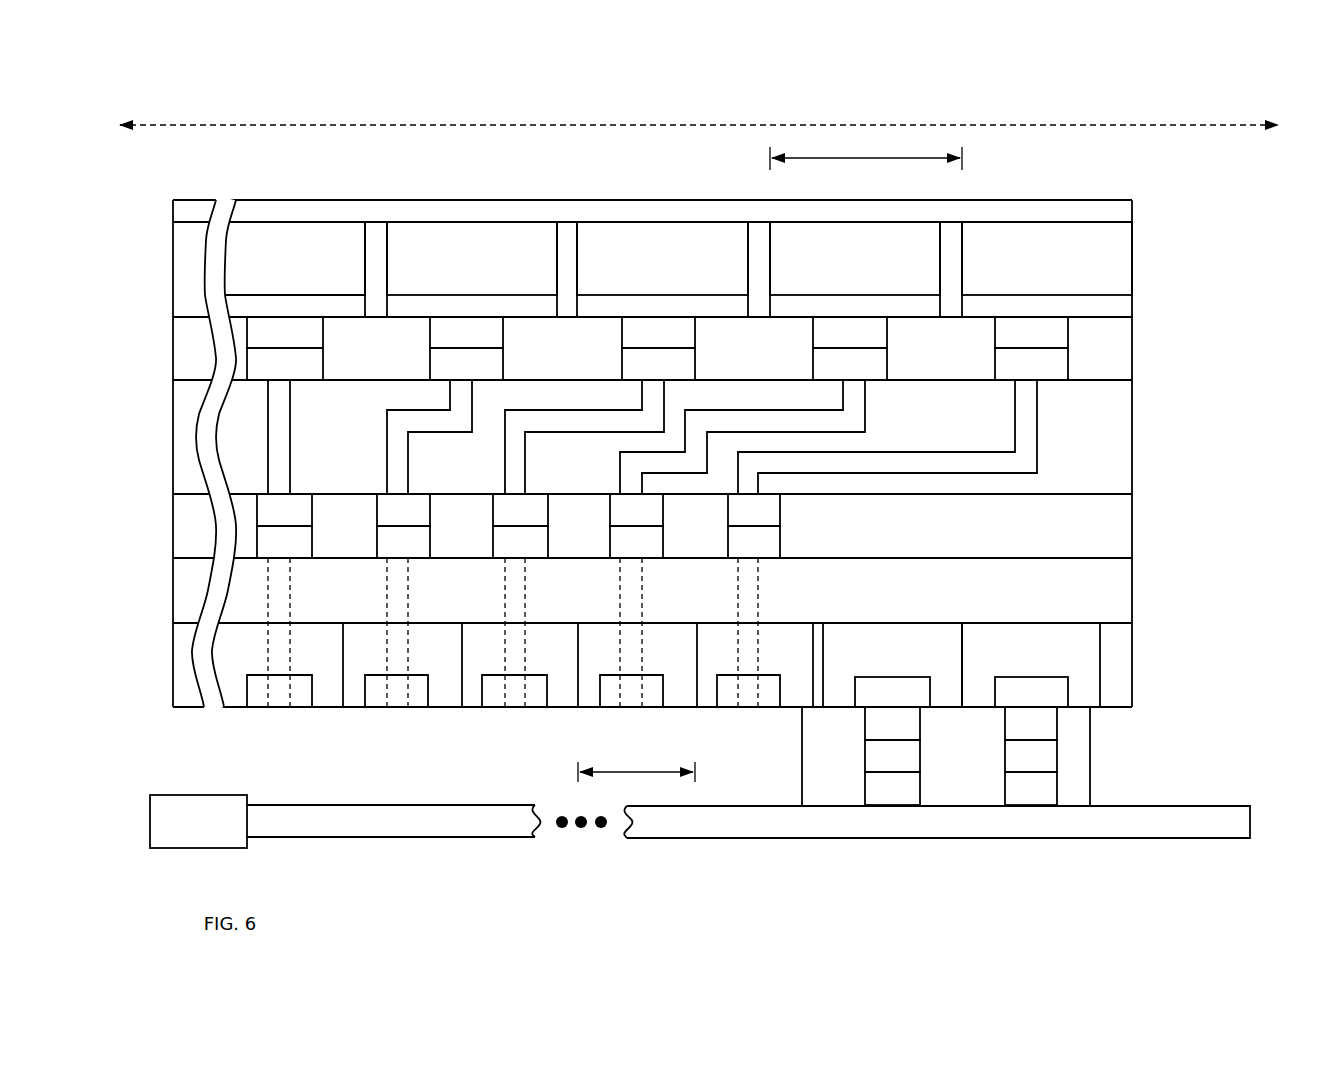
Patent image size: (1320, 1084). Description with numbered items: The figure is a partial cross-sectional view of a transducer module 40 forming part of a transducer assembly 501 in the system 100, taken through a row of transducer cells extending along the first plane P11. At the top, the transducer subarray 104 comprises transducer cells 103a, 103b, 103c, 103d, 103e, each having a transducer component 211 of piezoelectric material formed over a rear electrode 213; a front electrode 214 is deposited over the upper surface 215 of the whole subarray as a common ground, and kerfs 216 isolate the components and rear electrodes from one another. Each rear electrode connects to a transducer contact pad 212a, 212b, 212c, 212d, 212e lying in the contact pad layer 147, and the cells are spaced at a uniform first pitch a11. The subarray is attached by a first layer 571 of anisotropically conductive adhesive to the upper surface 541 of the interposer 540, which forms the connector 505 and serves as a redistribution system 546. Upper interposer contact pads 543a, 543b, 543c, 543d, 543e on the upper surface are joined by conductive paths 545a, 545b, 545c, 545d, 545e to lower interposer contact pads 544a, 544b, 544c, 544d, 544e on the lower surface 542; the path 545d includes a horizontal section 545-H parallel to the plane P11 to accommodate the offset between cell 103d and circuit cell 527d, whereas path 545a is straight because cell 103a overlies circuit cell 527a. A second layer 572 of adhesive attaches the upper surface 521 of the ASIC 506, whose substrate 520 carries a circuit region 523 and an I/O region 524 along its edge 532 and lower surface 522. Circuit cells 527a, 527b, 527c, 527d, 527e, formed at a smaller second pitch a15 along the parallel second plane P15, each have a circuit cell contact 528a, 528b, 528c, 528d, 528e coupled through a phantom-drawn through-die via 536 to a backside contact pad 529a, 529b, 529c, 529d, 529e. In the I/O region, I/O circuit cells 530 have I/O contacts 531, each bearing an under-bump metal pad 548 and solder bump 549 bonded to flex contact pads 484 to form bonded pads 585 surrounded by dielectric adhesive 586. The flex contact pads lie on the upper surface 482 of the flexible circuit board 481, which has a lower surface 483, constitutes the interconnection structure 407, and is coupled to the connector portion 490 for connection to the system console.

The system 100 is at (1235, 90).
The transducer module 40 is at (333, 163).
The transducer assembly 501 is at (940, 125).
The first pitch spacing a11 is at (866, 151).
The front electrode 214 is at (1122, 213).
The upper surface 215 is at (1015, 222).
The transducer component 211 is at (1122, 262).
The first plane P11 is at (1179, 283).
The kerfs 216 is at (567, 255).
The rear electrode 213 is at (1110, 307).
The transducer subarray 104 is at (165, 318).
The transducer cell 103a is at (295, 258).
The transducer cell 103b is at (472, 258).
The transducer cell 103c is at (662, 258).
The transducer cell 103d is at (855, 258).
The transducer cell 103e is at (1047, 258).
The connection layer 147 is at (235, 318).
The transducer contact pad 212a is at (285, 332).
The transducer contact pad 212b is at (466, 332).
The transducer contact pad 212c is at (658, 332).
The transducer contact pad 212d is at (850, 332).
The transducer contact pad 212e is at (1031, 332).
The upper interposer contact pad 543a is at (285, 364).
The upper interposer contact pad 543b is at (466, 364).
The upper interposer contact pad 543c is at (658, 364).
The upper interposer contact pad 543d is at (850, 364).
The upper interposer contact pad 543e is at (1031, 364).
The first layer of anisotropically conductive adhesive 571 is at (565, 360).
The upper surface 541 is at (1115, 382).
The interposer 540 is at (652, 454).
The connector 505 is at (1141, 408).
The redistribution system 546 is at (165, 388).
The conductive path 545a is at (298, 431).
The conductive path 545b is at (380, 421).
The conductive path 545c is at (498, 486).
The conductive path 545d is at (612, 486).
The conductive path 545e is at (1008, 402).
The horizontal section 545-H is at (808, 406).
The lower interposer contact pad 544a is at (284, 510).
The lower interposer contact pad 544b is at (403, 510).
The lower interposer contact pad 544c is at (520, 510).
The lower interposer contact pad 544d is at (636, 510).
The lower interposer contact pad 544e is at (754, 510).
The backside contact pad 529a is at (284, 542).
The backside contact pad 529b is at (403, 542).
The backside contact pad 529c is at (520, 542).
The backside contact pad 529d is at (636, 542).
The backside contact pad 529e is at (754, 542).
The second layer of anisotropically conductive adhesive 572 is at (865, 530).
The lower surface 542 is at (1100, 497).
The upper surface 521 is at (1112, 557).
The through-die vias 536 is at (268, 573).
The substrate 520 is at (652, 596).
The circuit region 523 is at (810, 614).
The I/O region 524 is at (833, 614).
The edge 532 is at (1140, 596).
The second plane P15 is at (1179, 700).
The ASIC 506 is at (165, 700).
The circuit cell 527a is at (317, 665).
The circuit cell 527b is at (436, 665).
The circuit cell 527c is at (553, 665).
The circuit cell 527d is at (670, 665).
The circuit cell 527e is at (787, 665).
The circuit cell contact 528a is at (300, 710).
The circuit cell contact 528b is at (413, 710).
The circuit cell contact 528c is at (537, 710).
The circuit cell contact 528d is at (650, 710).
The circuit cell contact 528e is at (770, 710).
The second pitch spacing a15 is at (636, 781).
The I/O circuit cells 530 is at (961, 665).
The I/O contacts 531 is at (961, 692).
The lower surface 522 is at (1133, 710).
The dielectric adhesive 586 is at (946, 756).
The under-bump metal pad 548 is at (961, 723).
The solder bump 549 is at (961, 756).
The flex contact pads 484 is at (961, 788).
The bonded pads 585 is at (933, 718).
The flexible circuit board 481 is at (937, 822).
The upper surface 482 is at (1122, 806).
The interconnection structure 407 is at (1184, 803).
The lower surface 483 is at (1155, 841).
The connector portion 490 is at (345, 821).